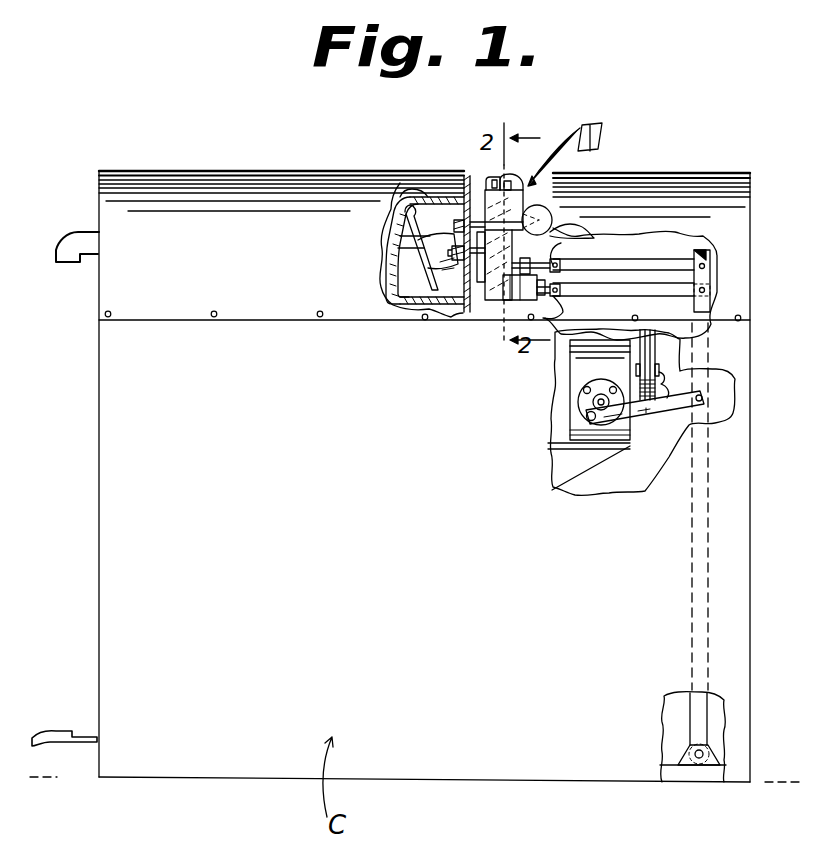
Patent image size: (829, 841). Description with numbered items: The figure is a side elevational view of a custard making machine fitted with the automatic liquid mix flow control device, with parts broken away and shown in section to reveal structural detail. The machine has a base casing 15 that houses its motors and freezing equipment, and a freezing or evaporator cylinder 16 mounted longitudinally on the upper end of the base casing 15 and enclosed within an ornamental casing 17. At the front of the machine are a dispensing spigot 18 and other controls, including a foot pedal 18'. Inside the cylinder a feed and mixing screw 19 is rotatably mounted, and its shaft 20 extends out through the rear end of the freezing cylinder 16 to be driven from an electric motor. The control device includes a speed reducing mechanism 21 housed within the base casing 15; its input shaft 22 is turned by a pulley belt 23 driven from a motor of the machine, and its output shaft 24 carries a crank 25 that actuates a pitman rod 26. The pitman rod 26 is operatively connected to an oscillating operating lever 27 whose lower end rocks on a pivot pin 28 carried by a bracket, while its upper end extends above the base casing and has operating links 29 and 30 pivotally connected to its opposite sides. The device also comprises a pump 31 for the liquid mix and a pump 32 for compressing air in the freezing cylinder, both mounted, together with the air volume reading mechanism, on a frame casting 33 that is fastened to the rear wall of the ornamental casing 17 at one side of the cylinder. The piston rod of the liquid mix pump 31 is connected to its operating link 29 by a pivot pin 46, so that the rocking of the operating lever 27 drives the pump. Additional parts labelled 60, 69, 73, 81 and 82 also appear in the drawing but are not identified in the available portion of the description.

The base casing 15 is at (440, 762).
The freezing or evaporator cylinder 16 is at (418, 200).
The ornamental casing 17 is at (300, 188).
The dispensing spigot 18 is at (70, 236).
The foot pedal 18' is at (64, 720).
The feed and mixing screw 19 is at (404, 210).
The shaft 20 is at (378, 270).
The speed reducing mechanism 21 is at (578, 372).
The input shaft 22 is at (675, 385).
The pulley belt 23 is at (650, 345).
The output shaft 24 is at (603, 398).
The crank 25 is at (590, 414).
The pitman rod 26 is at (668, 404).
The oscillating operating lever 27 is at (710, 254).
The pivot pin 28 is at (702, 752).
The operating link 29 is at (620, 290).
The operating link 30 is at (625, 265).
The pump 31 is at (510, 300).
The pump 32 is at (490, 300).
The frame casting 33 is at (460, 296).
The pivot pin 46 is at (576, 298).
The shaft 60 is at (560, 262).
The disk 69 is at (540, 206).
The lever 73 is at (578, 232).
The cap 81 is at (490, 176).
The cover 82 is at (518, 182).